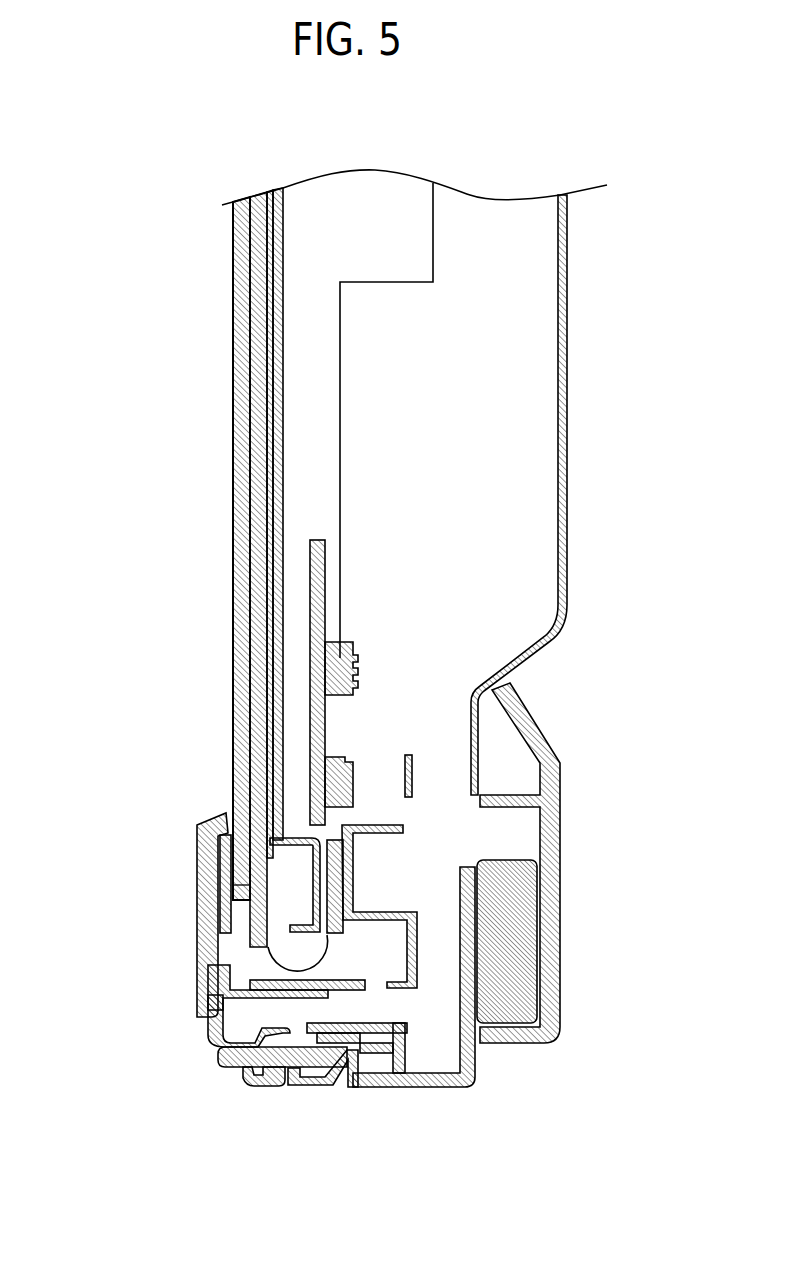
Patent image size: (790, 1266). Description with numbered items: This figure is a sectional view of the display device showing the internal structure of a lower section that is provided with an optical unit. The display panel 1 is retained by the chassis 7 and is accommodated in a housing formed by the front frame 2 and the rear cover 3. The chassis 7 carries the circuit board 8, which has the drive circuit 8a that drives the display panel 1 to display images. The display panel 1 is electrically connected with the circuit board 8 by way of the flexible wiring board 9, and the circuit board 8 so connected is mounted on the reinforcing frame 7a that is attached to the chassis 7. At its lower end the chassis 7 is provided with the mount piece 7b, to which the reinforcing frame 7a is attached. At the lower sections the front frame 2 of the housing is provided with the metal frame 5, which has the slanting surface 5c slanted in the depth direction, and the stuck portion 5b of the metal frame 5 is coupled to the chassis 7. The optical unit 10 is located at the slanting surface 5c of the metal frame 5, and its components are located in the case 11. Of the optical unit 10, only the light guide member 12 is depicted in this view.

The display panel 1 is at (232, 387).
The front frame 2 is at (197, 870).
The rear cover 3 is at (567, 241).
The metal frame 5 is at (213, 1027).
The stuck portion 5b is at (225, 972).
The slanting surface 5c is at (250, 1075).
The chassis 7 is at (272, 503).
The reinforcing frame 7a is at (413, 958).
The mount piece 7b is at (213, 1008).
The circuit board 8 is at (326, 560).
The drive circuit 8a is at (338, 765).
The flexible wiring board 9 is at (270, 960).
The optical unit 10 is at (287, 1088).
The case 11 is at (420, 1087).
The light guide member 12 is at (227, 1055).